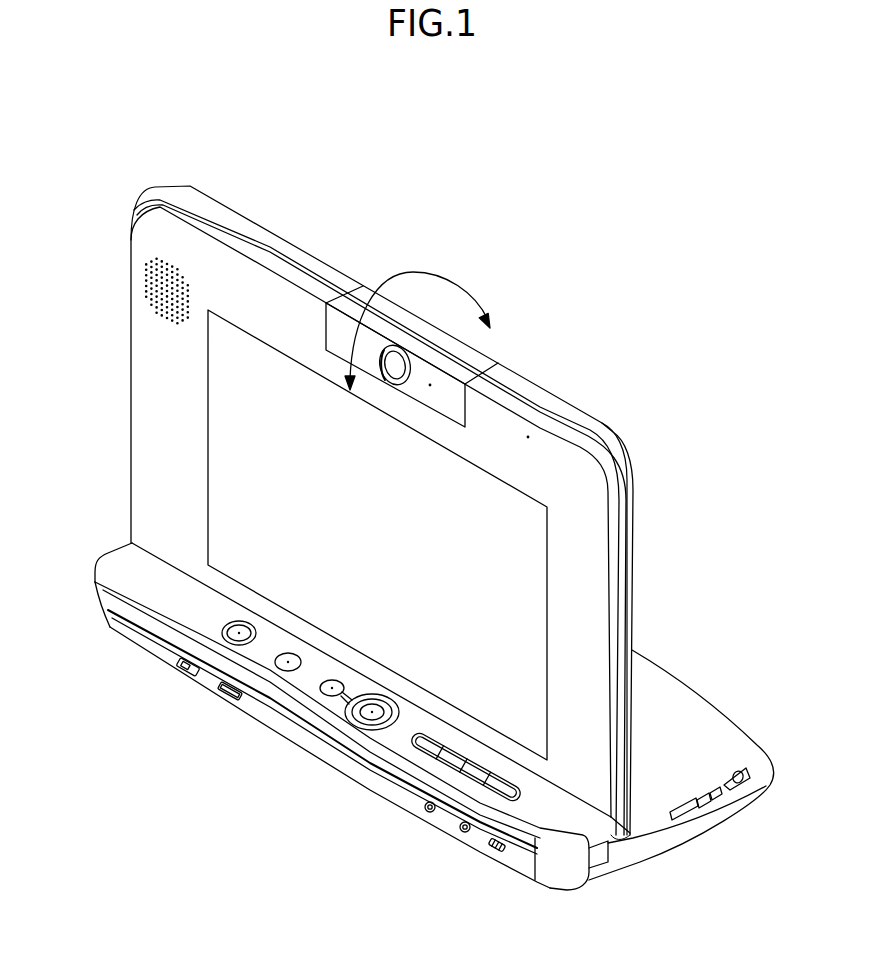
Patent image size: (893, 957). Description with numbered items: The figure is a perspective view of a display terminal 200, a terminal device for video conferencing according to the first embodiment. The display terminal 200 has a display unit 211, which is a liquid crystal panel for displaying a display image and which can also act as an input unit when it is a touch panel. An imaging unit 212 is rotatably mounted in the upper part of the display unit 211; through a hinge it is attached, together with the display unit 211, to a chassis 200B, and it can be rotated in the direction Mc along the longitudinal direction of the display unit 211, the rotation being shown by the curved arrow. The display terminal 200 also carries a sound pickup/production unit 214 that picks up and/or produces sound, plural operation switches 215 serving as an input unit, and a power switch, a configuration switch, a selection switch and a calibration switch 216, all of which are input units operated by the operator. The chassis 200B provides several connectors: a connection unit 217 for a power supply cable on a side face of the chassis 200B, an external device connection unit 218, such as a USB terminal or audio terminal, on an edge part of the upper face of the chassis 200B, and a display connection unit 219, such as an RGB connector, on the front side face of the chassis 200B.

The display terminal 200 is at (83, 113).
The chassis 200B is at (668, 832).
The display unit 211 is at (548, 577).
The imaging unit 212 is at (448, 387).
The sound pickup/production unit 214 is at (141, 281).
The operation switches 215 is at (412, 733).
The power switch, configuration switch, selection switch and calibration switch 216 is at (216, 617).
The connection unit 217 is at (700, 812).
The external device connection unit 218 is at (495, 856).
The display connection unit 219 is at (228, 699).